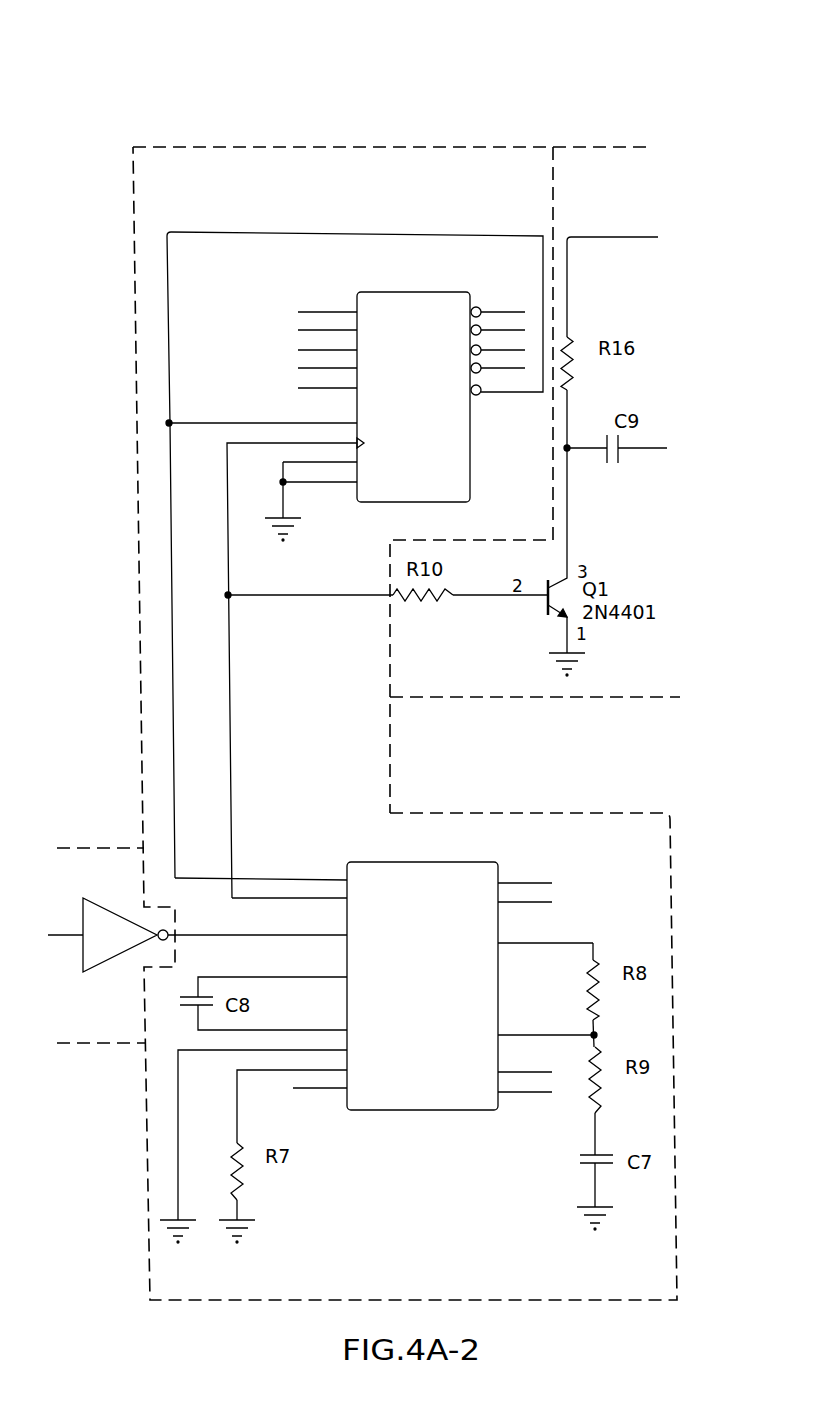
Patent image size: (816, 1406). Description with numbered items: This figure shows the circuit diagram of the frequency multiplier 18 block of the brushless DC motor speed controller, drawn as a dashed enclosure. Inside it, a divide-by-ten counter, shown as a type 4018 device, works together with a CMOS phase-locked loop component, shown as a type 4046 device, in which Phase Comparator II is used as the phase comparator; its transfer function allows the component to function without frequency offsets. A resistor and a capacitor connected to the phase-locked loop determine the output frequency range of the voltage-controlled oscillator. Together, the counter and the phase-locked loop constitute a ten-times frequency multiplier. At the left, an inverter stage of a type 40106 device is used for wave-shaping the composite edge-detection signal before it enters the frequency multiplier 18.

The frequency multiplier 18 is at (258, 147).
The counter integrated circuit U2 4018 is at (395, 403).
The phase-locked loop integrated circuit U3 4046 is at (443, 988).
The Schmitt trigger inverter U4B 40106 is at (120, 937).